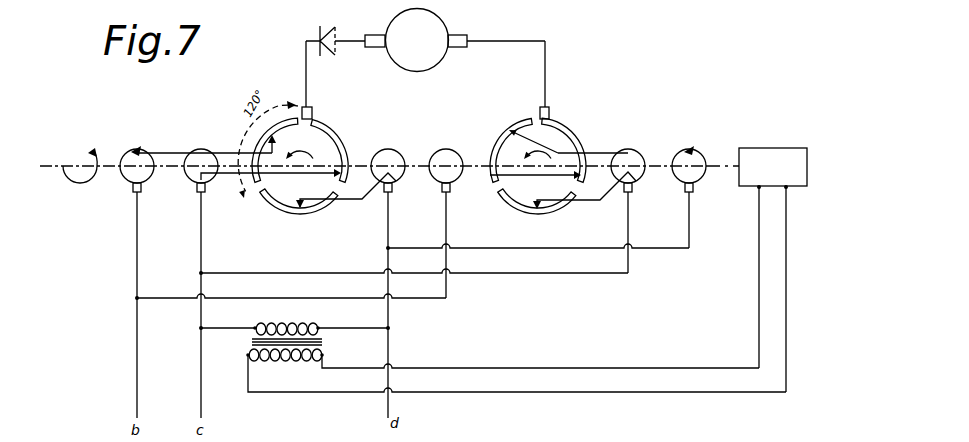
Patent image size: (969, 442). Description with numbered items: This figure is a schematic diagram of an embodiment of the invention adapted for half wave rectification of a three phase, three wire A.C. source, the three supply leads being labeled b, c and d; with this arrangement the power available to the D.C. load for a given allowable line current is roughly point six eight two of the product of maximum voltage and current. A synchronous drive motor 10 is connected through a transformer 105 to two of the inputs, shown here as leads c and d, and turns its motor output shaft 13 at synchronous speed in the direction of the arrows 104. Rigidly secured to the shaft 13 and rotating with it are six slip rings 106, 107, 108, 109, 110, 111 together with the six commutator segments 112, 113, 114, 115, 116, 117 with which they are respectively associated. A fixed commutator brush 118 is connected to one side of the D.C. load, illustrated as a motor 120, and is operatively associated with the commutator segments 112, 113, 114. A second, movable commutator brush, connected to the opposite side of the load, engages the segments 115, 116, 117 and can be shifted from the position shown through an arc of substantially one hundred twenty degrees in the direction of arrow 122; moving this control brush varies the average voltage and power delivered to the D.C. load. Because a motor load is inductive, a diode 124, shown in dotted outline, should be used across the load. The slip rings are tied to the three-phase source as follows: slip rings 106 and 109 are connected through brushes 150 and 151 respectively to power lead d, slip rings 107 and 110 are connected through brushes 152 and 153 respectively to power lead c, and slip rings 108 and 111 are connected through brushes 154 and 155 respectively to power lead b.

The synchronous drive motor 10 is at (775, 147).
The motor output shaft 13 is at (711, 169).
The arrows 104 is at (80, 184).
The transformer 105 is at (334, 347).
The slip ring 106 is at (691, 149).
The slip ring 107 is at (629, 149).
The slip ring 108 is at (456, 138).
The slip ring 109 is at (389, 149).
The slip ring 110 is at (194, 150).
The slip ring 111 is at (131, 149).
The commutator segment 112 is at (507, 129).
The commutator segment 113 is at (520, 203).
The commutator segment 114 is at (572, 131).
The commutator segment 115 is at (282, 203).
The commutator segment 116 is at (338, 135).
The commutator segment 117 is at (252, 138).
The fixed commutator brush 118 is at (549, 112).
The motor 120 is at (418, 71).
The arrow 122 is at (290, 99).
The diode 124 is at (338, 50).
The brush 150 is at (685, 193).
The brush 151 is at (384, 193).
The brush 152 is at (624, 194).
The brush 153 is at (198, 191).
The brush 154 is at (443, 192).
The brush 155 is at (134, 193).